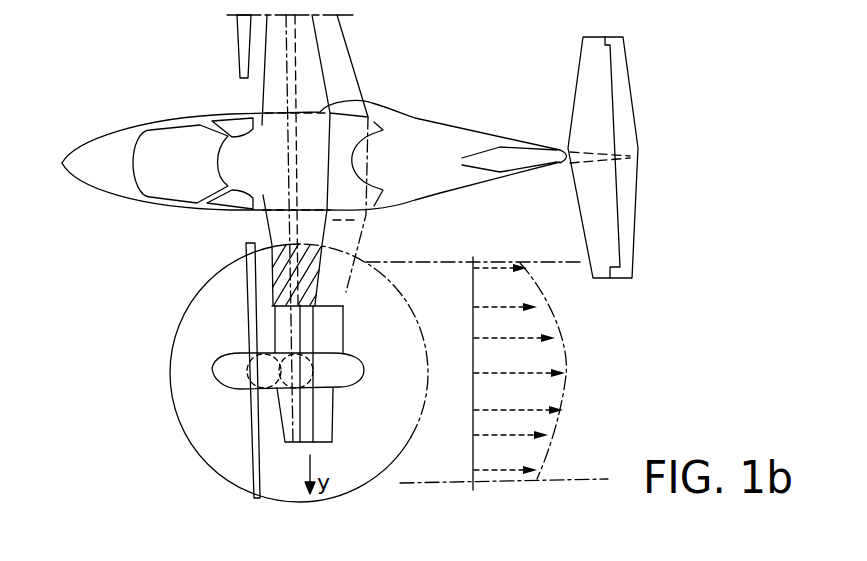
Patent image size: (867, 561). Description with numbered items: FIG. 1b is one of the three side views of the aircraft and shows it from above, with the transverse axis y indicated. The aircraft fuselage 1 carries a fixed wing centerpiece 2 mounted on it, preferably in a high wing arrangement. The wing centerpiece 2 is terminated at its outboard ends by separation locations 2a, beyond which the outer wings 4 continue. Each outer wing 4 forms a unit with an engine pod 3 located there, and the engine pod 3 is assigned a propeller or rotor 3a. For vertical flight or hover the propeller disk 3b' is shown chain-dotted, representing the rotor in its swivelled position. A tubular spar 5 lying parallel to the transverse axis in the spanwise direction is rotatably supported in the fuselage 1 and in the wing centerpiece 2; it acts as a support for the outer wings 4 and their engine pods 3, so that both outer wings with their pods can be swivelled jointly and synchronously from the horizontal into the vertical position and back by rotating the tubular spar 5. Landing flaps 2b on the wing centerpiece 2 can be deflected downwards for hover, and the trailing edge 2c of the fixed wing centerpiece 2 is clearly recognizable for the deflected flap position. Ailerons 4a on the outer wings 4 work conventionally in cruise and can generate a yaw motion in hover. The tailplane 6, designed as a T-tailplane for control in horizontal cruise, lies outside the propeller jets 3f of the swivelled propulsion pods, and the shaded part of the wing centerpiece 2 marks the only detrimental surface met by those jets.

The aircraft fuselage 1 is at (440, 124).
The fixed wing centerpiece 2 is at (270, 70).
The separation location 2a is at (270, 305).
The landing flap 2b is at (337, 70).
The trailing edge 2c is at (318, 248).
The engine pod 3 is at (262, 397).
The propeller or rotor 3a is at (233, 262).
The propeller disk 3b' is at (212, 370).
The propeller jets 3f is at (549, 318).
The outer wing 4 is at (287, 337).
The aileron 4a is at (327, 428).
The tubular spar 5 is at (290, 229).
The tailplane 6 is at (610, 200).